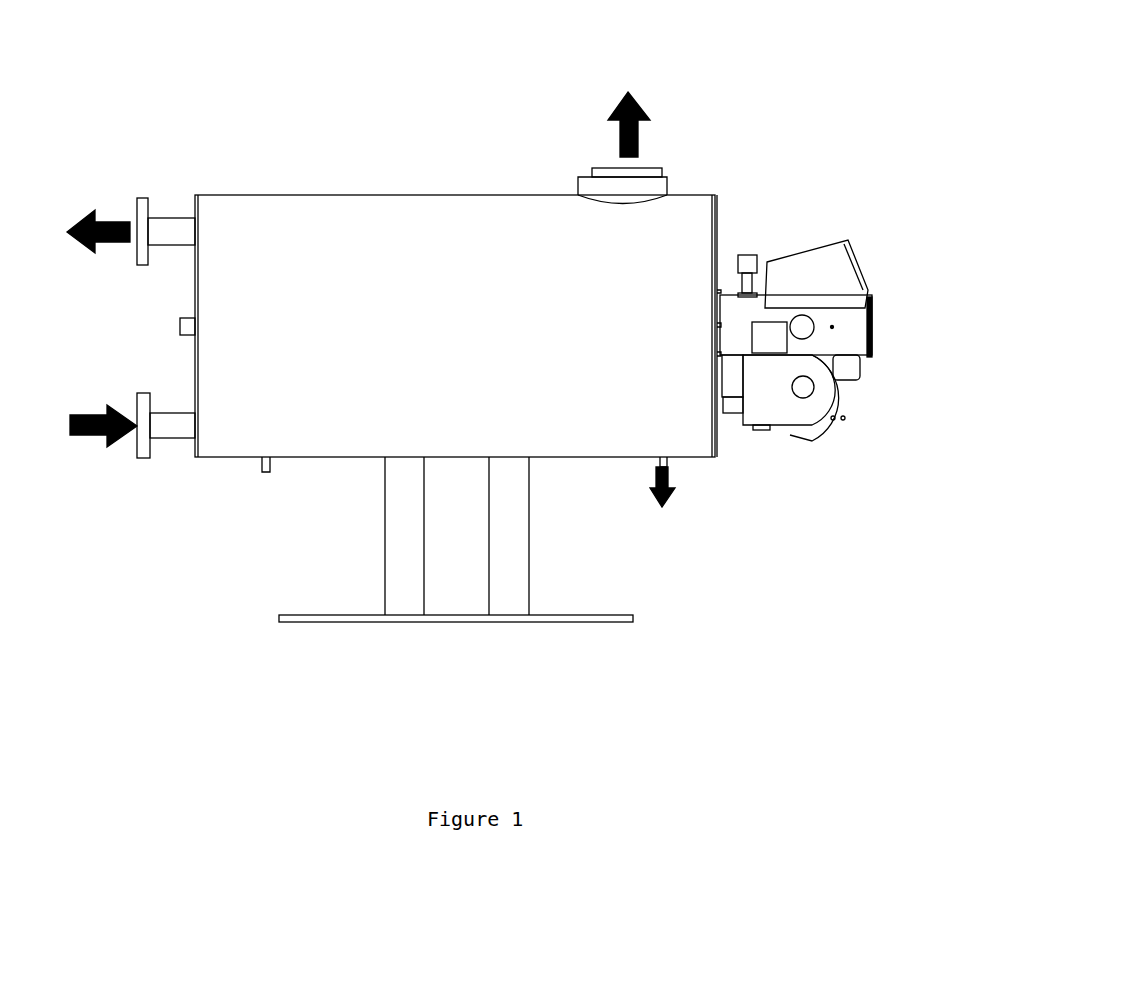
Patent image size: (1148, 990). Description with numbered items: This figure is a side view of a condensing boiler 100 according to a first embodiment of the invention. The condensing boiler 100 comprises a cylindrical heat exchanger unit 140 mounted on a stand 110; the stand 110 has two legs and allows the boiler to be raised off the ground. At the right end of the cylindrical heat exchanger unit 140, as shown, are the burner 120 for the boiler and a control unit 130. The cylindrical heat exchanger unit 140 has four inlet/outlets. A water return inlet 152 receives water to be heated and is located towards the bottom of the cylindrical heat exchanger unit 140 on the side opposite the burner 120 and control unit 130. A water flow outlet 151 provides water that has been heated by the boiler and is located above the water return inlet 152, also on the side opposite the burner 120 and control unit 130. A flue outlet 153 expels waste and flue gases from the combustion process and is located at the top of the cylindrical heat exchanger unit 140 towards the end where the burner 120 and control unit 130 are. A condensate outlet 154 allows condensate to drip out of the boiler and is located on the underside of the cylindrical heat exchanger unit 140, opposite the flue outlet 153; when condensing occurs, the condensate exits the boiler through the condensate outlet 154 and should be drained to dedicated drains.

The condensing boiler 100 is at (774, 72).
The stand 110 is at (517, 583).
The burner 120 is at (855, 337).
The control unit 130 is at (827, 263).
The cylindrical heat exchanger unit 140 is at (252, 430).
The water flow outlet 151 is at (80, 220).
The water return inlet 152 is at (82, 435).
The flue outlet 153 is at (637, 100).
The condensate outlet 154 is at (665, 502).